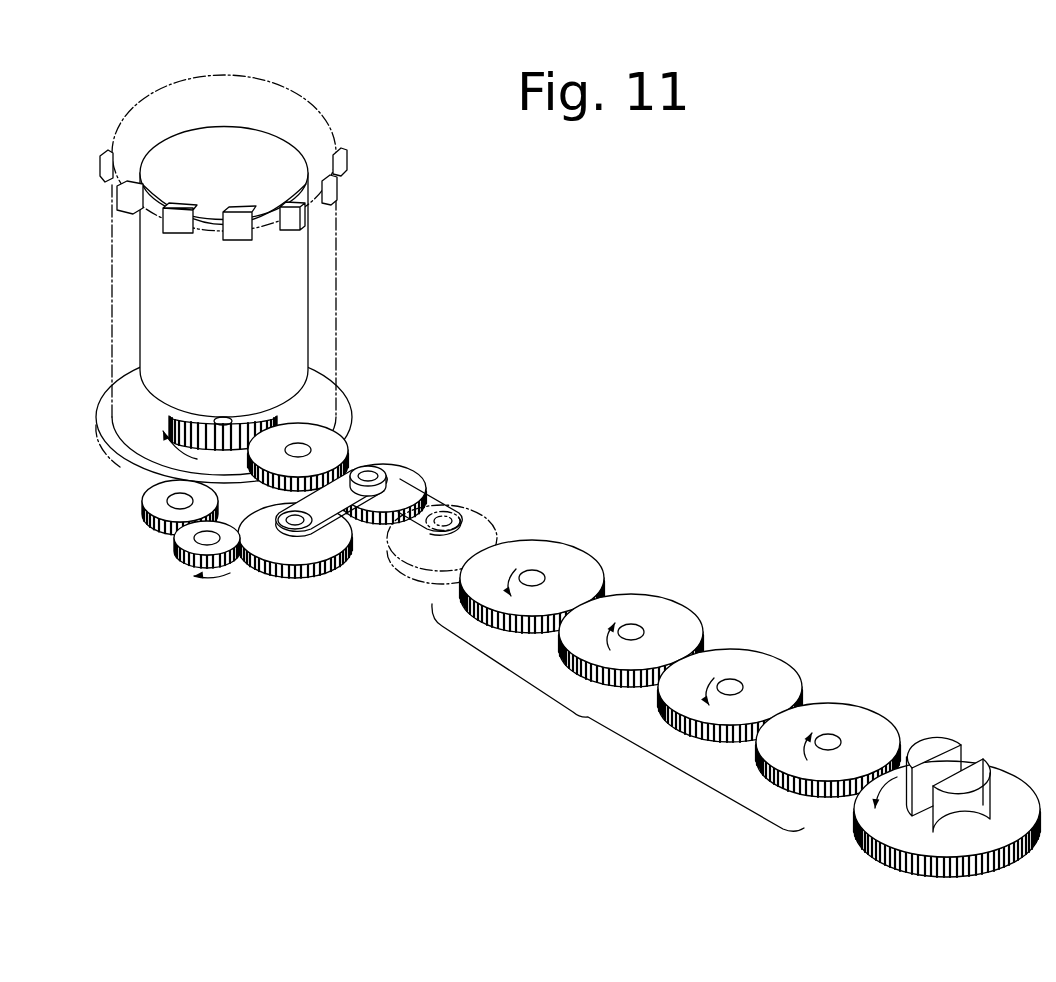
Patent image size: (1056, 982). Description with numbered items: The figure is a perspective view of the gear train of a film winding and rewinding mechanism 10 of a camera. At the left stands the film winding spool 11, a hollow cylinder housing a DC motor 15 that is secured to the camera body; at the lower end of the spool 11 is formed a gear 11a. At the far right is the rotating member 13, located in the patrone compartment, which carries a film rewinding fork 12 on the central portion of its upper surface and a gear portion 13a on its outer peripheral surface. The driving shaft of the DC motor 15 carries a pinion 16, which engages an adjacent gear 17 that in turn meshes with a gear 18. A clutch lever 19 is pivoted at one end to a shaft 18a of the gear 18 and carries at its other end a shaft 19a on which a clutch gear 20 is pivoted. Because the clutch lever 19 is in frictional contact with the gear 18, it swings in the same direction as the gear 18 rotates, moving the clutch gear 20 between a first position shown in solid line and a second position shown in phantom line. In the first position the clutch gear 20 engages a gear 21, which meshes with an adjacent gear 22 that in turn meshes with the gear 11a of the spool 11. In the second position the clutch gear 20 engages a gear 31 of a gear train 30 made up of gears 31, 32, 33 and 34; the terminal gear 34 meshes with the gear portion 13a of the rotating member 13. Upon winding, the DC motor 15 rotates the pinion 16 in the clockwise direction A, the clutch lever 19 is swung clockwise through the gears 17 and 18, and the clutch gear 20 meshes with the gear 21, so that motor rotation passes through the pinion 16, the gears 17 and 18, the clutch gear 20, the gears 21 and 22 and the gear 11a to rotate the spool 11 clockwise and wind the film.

The drive mechanism 10 is at (920, 168).
The film winding spool 11 is at (187, 85).
The gear 11a is at (103, 442).
The film rewinding fork 12 is at (930, 748).
The rotating member 13 is at (945, 811).
The gear portion 13a is at (897, 865).
The DC motor 15 is at (163, 266).
The pinion 16 is at (177, 437).
The gear 17 is at (312, 430).
The gear 18 is at (403, 480).
The shaft 18a is at (373, 478).
The clutch lever 19 is at (362, 532).
The shaft 19a is at (295, 526).
The clutch gear 20 is at (280, 552).
The gear 21 is at (192, 565).
The gear 22 is at (155, 505).
The gear train 30 is at (618, 717).
The gear 31 is at (565, 560).
The gear 32 is at (672, 617).
The gear 33 is at (738, 660).
The terminal gear 34 is at (833, 717).
The clockwise direction A is at (160, 442).